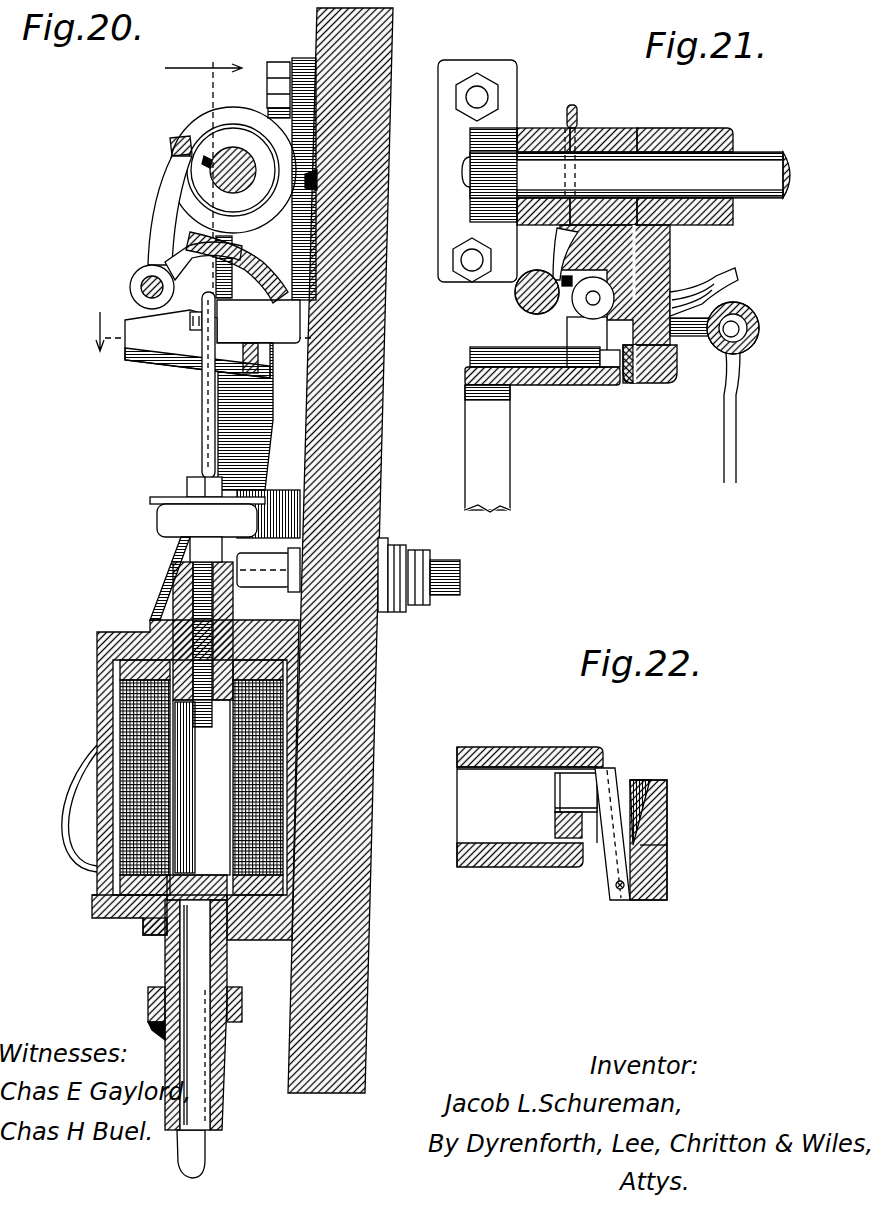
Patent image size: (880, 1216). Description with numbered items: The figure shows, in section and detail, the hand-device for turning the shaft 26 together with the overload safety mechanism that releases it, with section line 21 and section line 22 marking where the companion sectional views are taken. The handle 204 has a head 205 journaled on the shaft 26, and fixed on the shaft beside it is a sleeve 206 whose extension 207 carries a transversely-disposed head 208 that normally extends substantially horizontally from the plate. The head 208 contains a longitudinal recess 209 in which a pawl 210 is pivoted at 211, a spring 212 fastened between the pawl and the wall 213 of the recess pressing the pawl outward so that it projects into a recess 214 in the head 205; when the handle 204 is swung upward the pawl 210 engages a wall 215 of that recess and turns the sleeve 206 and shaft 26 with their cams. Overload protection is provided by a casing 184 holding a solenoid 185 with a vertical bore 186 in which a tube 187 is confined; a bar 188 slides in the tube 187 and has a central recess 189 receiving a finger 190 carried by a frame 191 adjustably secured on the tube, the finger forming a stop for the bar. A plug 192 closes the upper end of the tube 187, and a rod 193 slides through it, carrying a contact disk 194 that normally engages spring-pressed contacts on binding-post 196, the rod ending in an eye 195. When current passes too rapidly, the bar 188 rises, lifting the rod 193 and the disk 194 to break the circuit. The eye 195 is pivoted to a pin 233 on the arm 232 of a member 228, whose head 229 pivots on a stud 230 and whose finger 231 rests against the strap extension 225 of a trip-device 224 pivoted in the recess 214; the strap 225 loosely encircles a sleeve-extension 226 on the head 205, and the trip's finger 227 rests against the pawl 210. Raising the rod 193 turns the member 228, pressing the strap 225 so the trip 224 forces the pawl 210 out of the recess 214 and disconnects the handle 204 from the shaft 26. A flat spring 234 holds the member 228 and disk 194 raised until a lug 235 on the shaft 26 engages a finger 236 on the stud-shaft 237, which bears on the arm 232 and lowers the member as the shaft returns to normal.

In FIG. 20, the section line 21 is at (203, 190).
In FIG. 20, the section line 22 is at (185, 335).
In FIG. 20, the shaft 26 is at (230, 148).
In FIG. 21, the shaft 26 is at (752, 160).
In FIG. 20, the casing 184 is at (100, 713).
In FIG. 20, the solenoid 185 is at (123, 828).
In FIG. 20, the vertical bore 186 is at (128, 922).
In FIG. 20, the tube 187 is at (165, 942).
In FIG. 20, the bar 188 is at (248, 1015).
In FIG. 20, the longitudinal central recess 189 is at (207, 955).
In FIG. 20, the finger 190 is at (195, 1072).
In FIG. 20, the frame 191 is at (148, 1010).
In FIG. 20, the plug 192 is at (172, 590).
In FIG. 20, the rod 193 is at (179, 566).
In FIG. 21, the rod 193 is at (740, 405).
In FIG. 20, the contact disk 194 is at (158, 521).
In FIG. 20, the eye 195 is at (205, 335).
In FIG. 21, the eye 195 is at (760, 335).
In FIG. 20, the binding-post 196 is at (420, 548).
In FIG. 20, the handle 204 is at (262, 472).
In FIG. 21, the handle 204 is at (500, 485).
In FIG. 21, the head 205 is at (603, 127).
In FIG. 21, the sleeve 206 is at (680, 127).
In FIG. 20, the extension 207 is at (168, 217).
In FIG. 21, the extension 207 is at (662, 262).
In FIG. 20, the head 208 is at (132, 356).
In FIG. 21, the head 208 is at (660, 378).
In FIG. 22, the head 208 is at (668, 795).
In FIG. 21, the longitudinal recess 209 is at (643, 387).
In FIG. 22, the longitudinal recess 209 is at (633, 782).
In FIG. 20, the pawl 210 is at (262, 360).
In FIG. 21, the pawl 210 is at (612, 385).
In FIG. 22, the pawl 210 is at (610, 767).
In FIG. 21, the pivot 211 is at (633, 387).
In FIG. 22, the pivot 211 is at (623, 890).
In FIG. 22, the spring 212 is at (668, 845).
In FIG. 22, the wall 213 is at (635, 777).
In FIG. 21, the recess 214 is at (520, 335).
In FIG. 22, the recess 214 is at (503, 785).
In FIG. 21, the wall 215 is at (560, 385).
In FIG. 22, the wall 215 is at (595, 770).
In FIG. 21, the trip-device 224 is at (560, 300).
In FIG. 20, the strap extension 225 is at (204, 127).
In FIG. 21, the strap extension 225 is at (575, 103).
In FIG. 21, the sleeve-extension 226 is at (530, 127).
In FIG. 21, the finger 227 is at (583, 332).
In FIG. 22, the finger 227 is at (575, 795).
In FIG. 21, the member 228 is at (562, 275).
In FIG. 21, the head 229 is at (560, 282).
In FIG. 20, the stud 230 is at (320, 283).
In FIG. 20, the finger 231 is at (288, 203).
In FIG. 21, the finger 231 is at (593, 182).
In FIG. 21, the arm 232 is at (692, 337).
In FIG. 20, the pin 233 is at (190, 322).
In FIG. 21, the pin 233 is at (740, 322).
In FIG. 20, the flat spring 234 is at (368, 185).
In FIG. 20, the lug 235 is at (190, 205).
In FIG. 20, the finger 236 is at (152, 258).
In FIG. 21, the finger 236 is at (755, 262).
In FIG. 20, the stud-shaft 237 is at (130, 287).